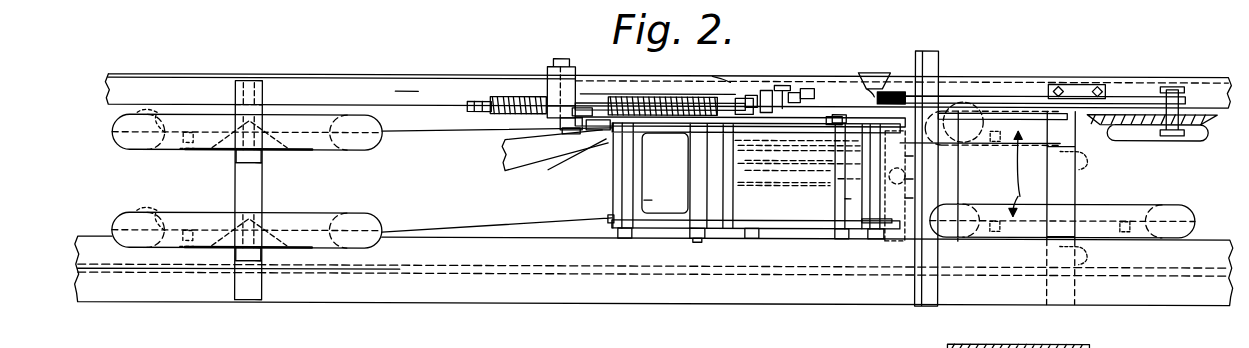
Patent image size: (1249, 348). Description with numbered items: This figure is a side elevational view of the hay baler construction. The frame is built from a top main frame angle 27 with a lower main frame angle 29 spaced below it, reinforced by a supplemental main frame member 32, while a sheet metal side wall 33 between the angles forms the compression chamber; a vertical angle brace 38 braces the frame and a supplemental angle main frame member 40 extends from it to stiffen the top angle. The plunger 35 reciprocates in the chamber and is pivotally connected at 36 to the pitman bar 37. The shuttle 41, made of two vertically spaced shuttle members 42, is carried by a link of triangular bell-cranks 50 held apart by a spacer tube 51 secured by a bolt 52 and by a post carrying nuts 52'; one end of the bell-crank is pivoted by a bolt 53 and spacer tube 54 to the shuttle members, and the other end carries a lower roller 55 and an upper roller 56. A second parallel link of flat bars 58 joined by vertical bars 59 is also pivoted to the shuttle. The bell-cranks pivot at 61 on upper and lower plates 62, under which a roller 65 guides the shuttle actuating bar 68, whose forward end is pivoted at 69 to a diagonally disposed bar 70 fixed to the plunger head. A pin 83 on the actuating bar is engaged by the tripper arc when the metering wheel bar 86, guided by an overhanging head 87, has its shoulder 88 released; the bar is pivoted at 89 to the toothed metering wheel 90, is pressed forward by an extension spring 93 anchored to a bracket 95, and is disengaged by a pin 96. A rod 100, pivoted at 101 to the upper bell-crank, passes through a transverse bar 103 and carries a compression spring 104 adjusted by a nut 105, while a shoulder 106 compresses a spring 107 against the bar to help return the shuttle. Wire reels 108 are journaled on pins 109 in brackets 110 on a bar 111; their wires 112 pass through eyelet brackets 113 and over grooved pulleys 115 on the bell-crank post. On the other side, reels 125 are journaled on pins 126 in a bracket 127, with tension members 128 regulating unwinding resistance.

The top main frame angle 27 is at (1210, 80).
The lower main frame angle 29 is at (1216, 218).
The supplemental main frame member 32 is at (1018, 289).
The sheet metal side wall 33 is at (920, 179).
The plunger 35 is at (727, 80).
The pivotal connection 36 is at (950, 182).
The pitman bar 37 is at (513, 172).
The vertical angle brace 38 is at (926, 56).
The supplemental angle main frame member 40 is at (405, 95).
The shuttle 41 is at (840, 128).
The shuttle member 42 is at (790, 230).
The bell-crank link 50 is at (880, 238).
The spacer tube 51 is at (768, 185).
The bolt 52 is at (759, 244).
The nut 52' is at (839, 157).
The bolt 53 is at (875, 238).
The spacer tube 54 is at (903, 240).
The lower roller 55 is at (832, 116).
The upper roller 56 is at (766, 90).
The flat bar 58 is at (672, 140).
The vertical bar 59 is at (844, 198).
The pivotal connection 61 is at (692, 238).
The plate 62 is at (616, 231).
The roller 65 is at (790, 158).
The shuttle actuating bar 68 is at (578, 108).
The pivotal connection 69 is at (566, 130).
The diagonally disposed bar 70 is at (572, 167).
The pin 83 is at (750, 95).
The metering wheel bar 86 is at (1003, 93).
The overhanging head 87 is at (779, 85).
The shoulder 88 is at (806, 88).
The pivotal attachment 89 is at (1171, 85).
The metering wheel 90 is at (1205, 115).
The extension spring 93 is at (892, 90).
The bracket 95 is at (872, 70).
The pin 96 is at (793, 92).
The rod 100 is at (605, 96).
The pivotal connection 101 is at (755, 147).
The transverse bar 103 is at (550, 66).
The compression spring 104 is at (513, 96).
The nut 105 is at (490, 100).
The shoulder 106 is at (742, 97).
The spring 107 is at (662, 98).
The wire reel 108 is at (200, 150).
The pin 109 is at (280, 122).
The bracket 110 is at (262, 262).
The bar 111 is at (250, 84).
The wire 112 is at (466, 134).
The eyelet bracket 113 is at (612, 215).
The grooved pulley 115 is at (835, 216).
The wire reel 125 is at (1020, 173).
The pin 126 is at (1076, 202).
The bracket 127 is at (1075, 183).
The tension member 128 is at (1090, 256).